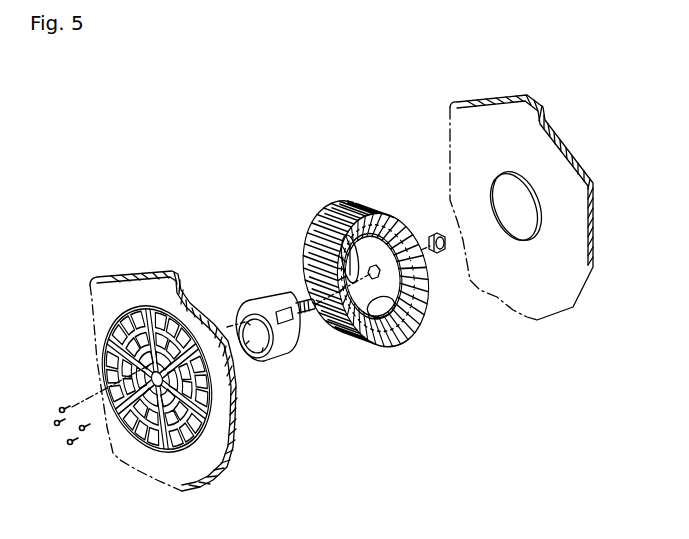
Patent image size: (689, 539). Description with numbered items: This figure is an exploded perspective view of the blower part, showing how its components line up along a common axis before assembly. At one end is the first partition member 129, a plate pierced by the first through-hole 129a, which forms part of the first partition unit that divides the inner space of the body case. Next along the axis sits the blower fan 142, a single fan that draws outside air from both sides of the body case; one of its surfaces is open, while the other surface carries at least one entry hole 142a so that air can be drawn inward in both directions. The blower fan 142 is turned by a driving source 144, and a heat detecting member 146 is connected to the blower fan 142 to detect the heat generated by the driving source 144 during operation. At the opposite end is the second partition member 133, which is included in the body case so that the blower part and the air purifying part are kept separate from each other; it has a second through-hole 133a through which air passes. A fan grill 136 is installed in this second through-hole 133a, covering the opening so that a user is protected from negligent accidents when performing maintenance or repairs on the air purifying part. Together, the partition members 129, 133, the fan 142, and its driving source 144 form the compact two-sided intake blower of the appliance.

The first partition member 129 is at (467, 117).
The first through-hole 129a is at (531, 185).
The second partition member 133 is at (116, 288).
The second through-hole 133a is at (185, 447).
The fan grill 136 is at (118, 462).
The blower fan 142 is at (386, 215).
The entry hole 142a is at (318, 252).
The driving source 144 is at (265, 303).
The heat detecting member 146 is at (284, 311).